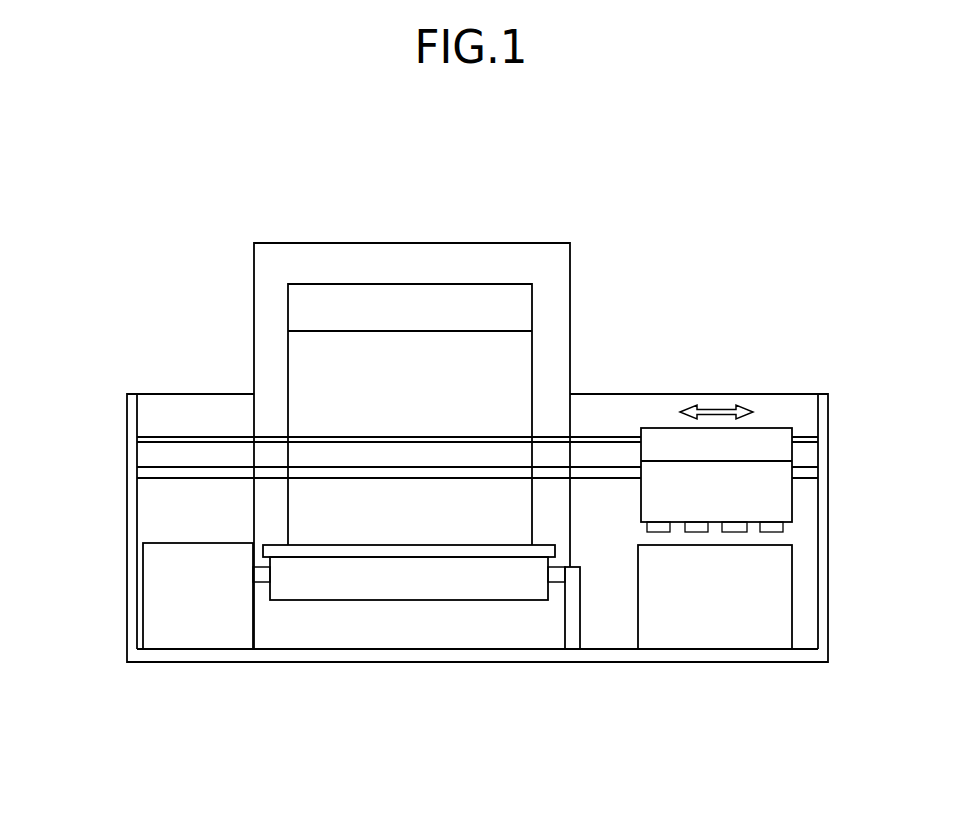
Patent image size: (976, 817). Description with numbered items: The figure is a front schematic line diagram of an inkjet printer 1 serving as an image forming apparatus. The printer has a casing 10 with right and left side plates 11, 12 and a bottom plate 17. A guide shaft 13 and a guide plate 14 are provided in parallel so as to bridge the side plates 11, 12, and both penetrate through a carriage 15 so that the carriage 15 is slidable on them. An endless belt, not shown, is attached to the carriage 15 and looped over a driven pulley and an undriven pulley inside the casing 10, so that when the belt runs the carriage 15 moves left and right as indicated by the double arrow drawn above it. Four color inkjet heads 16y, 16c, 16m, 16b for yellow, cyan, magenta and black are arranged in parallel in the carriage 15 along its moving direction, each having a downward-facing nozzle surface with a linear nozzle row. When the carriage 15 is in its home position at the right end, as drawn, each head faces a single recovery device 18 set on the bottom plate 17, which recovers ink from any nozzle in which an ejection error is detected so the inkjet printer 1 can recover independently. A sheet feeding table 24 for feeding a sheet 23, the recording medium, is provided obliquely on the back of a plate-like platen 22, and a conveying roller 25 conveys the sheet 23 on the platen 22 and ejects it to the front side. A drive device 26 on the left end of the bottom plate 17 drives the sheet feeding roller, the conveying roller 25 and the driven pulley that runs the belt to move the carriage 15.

The inkjet printer 1 is at (686, 175).
The casing 10 is at (192, 394).
The side plate 11 is at (128, 520).
The side plate 12 is at (828, 509).
The guide shaft 13 is at (140, 467).
The guide plate 14 is at (140, 437).
The carriage 15 is at (777, 428).
The inkjet head 16y is at (658, 532).
The inkjet head 16c is at (697, 532).
The inkjet head 16m is at (735, 532).
The inkjet head 16b is at (783, 532).
The bottom plate 17 is at (418, 662).
The recovery device 18 is at (710, 638).
The platen 22 is at (480, 549).
The sheet 23 is at (413, 308).
The sheet feeding table 24 is at (552, 308).
The conveying roller 25 is at (310, 582).
The drive device 26 is at (193, 620).